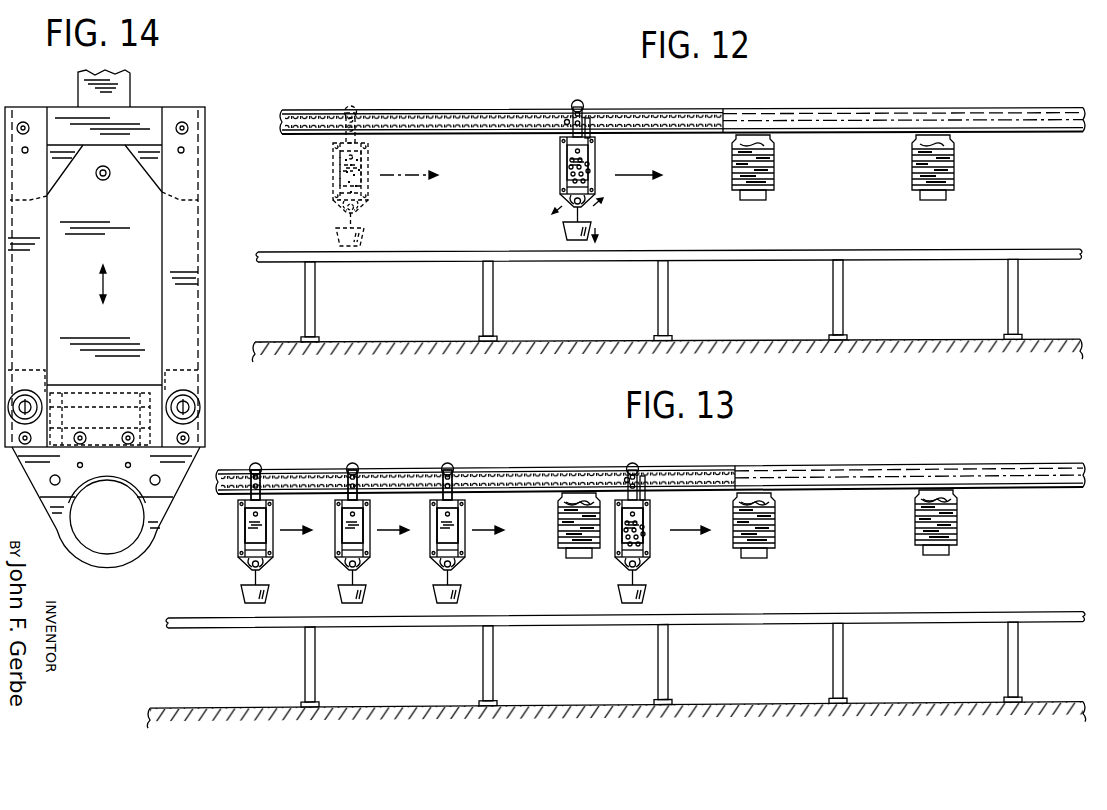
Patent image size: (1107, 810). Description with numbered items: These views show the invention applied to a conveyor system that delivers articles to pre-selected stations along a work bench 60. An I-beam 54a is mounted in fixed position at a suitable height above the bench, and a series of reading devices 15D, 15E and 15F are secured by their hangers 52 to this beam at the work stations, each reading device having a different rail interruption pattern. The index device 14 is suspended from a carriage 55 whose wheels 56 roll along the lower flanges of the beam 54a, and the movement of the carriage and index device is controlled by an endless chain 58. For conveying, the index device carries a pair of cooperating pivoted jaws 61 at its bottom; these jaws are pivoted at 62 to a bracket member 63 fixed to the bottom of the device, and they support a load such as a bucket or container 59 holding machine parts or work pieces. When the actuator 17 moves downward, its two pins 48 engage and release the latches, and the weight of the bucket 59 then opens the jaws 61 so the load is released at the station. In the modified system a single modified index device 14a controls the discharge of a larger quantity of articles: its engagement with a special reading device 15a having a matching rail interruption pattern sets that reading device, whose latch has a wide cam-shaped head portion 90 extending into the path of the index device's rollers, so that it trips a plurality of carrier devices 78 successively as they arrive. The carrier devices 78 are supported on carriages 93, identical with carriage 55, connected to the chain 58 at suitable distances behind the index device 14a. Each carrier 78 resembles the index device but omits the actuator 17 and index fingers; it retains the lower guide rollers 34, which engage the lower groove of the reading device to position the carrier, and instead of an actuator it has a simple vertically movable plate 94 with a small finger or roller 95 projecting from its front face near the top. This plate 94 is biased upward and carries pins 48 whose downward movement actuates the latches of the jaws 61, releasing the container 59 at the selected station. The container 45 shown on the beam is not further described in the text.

In FIG. 12, the index device 14 is at (333, 172).
In FIG. 13, the modified index device 14a is at (652, 529).
In FIG. 12, the reading device 15D is at (598, 136).
In FIG. 12, the reading device 15E is at (777, 181).
In FIG. 12, the reading device 15F is at (959, 181).
In FIG. 13, the special form of reading device 15a is at (558, 506).
In FIG. 13, the actuator 17 is at (621, 514).
In FIG. 14, the lower guide rollers 34 is at (28, 390).
In FIG. 12, the container 45 is at (760, 152).
In FIG. 14, the pins 48 is at (130, 398).
In FIG. 12, the hangers 52 is at (764, 118).
In FIG. 13, the hangers 52 is at (962, 479).
In FIG. 12, the I-beam 54a is at (855, 112).
In FIG. 13, the I-beam 54a is at (857, 478).
In FIG. 12, the carriage 55 is at (565, 118).
In FIG. 13, the carriage 55 is at (636, 471).
In FIG. 12, the wheels 56 is at (581, 117).
In FIG. 13, the wheels 56 is at (644, 472).
In FIG. 12, the endless chain 58 is at (450, 118).
In FIG. 13, the endless chain 58 is at (691, 472).
In FIG. 12, the bucket 59 is at (336, 235).
In FIG. 13, the bucket 59 is at (341, 594).
In FIG. 12, the work bench 60 is at (741, 263).
In FIG. 13, the work bench 60 is at (768, 617).
In FIG. 14, the pivoted jaws 61 is at (126, 553).
In FIG. 12, the pivoted jaws 61 is at (339, 212).
In FIG. 13, the pivoted jaws 61 is at (250, 570).
In FIG. 14, the pivots 62 is at (49, 481).
In FIG. 14, the bracket member 63 is at (196, 469).
In FIG. 14, the carrier devices 78 is at (207, 184).
In FIG. 13, the carrier devices 78 is at (273, 528).
In FIG. 13, the head portion 90 is at (561, 516).
In FIG. 13, the carriages 93 is at (255, 478).
In FIG. 14, the vertically movable plate 94 is at (148, 265).
In FIG. 13, the vertically movable plate 94 is at (254, 541).
In FIG. 14, the finger or roller 95 is at (108, 181).